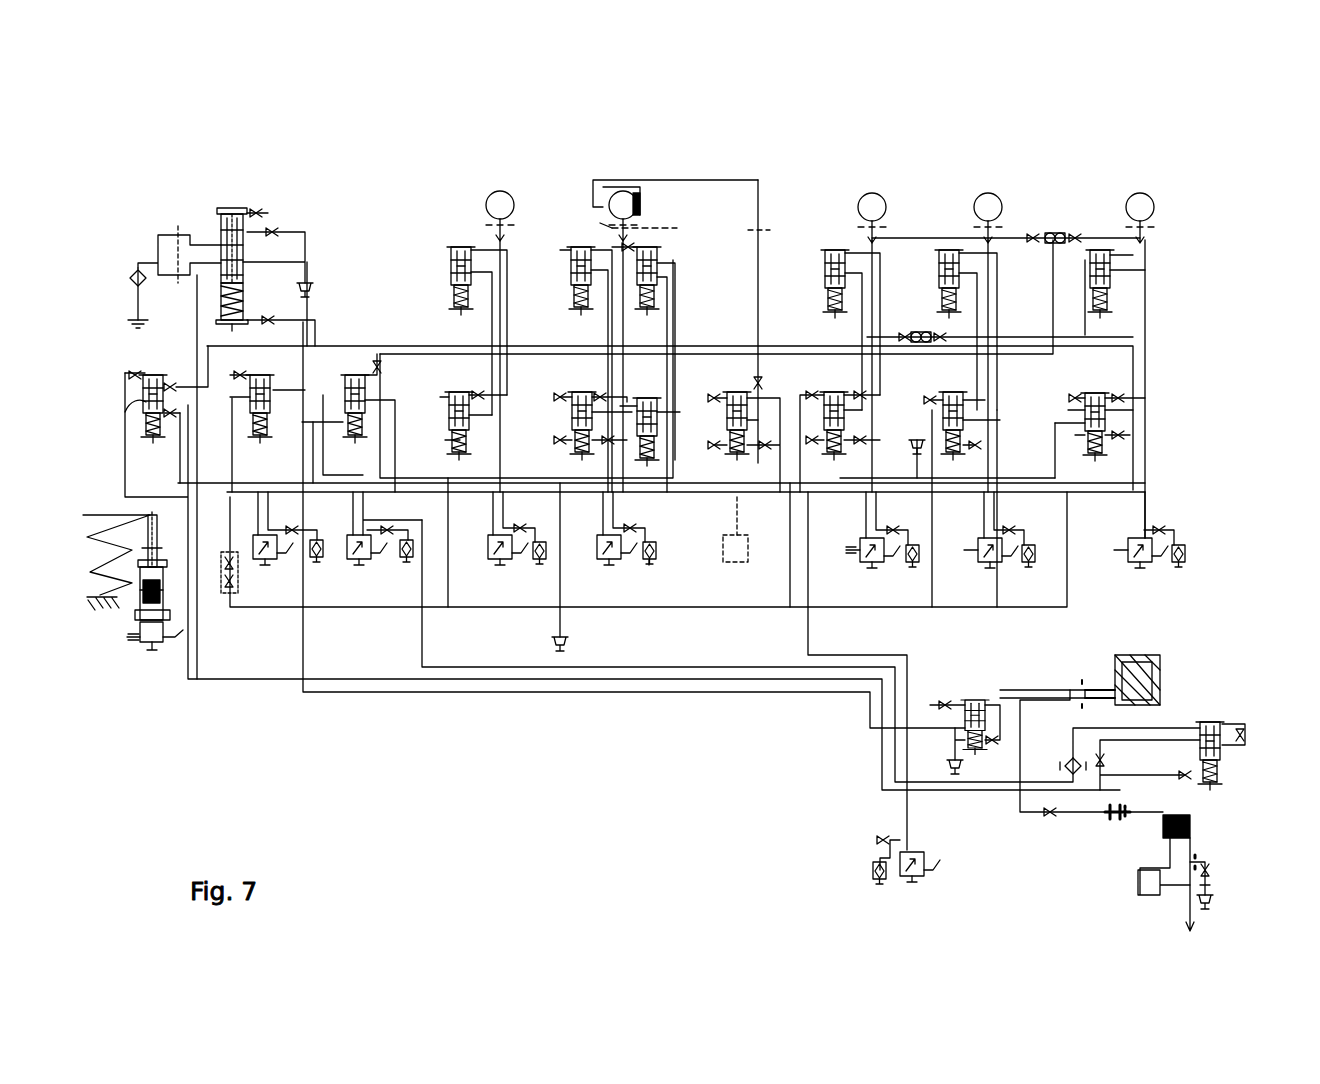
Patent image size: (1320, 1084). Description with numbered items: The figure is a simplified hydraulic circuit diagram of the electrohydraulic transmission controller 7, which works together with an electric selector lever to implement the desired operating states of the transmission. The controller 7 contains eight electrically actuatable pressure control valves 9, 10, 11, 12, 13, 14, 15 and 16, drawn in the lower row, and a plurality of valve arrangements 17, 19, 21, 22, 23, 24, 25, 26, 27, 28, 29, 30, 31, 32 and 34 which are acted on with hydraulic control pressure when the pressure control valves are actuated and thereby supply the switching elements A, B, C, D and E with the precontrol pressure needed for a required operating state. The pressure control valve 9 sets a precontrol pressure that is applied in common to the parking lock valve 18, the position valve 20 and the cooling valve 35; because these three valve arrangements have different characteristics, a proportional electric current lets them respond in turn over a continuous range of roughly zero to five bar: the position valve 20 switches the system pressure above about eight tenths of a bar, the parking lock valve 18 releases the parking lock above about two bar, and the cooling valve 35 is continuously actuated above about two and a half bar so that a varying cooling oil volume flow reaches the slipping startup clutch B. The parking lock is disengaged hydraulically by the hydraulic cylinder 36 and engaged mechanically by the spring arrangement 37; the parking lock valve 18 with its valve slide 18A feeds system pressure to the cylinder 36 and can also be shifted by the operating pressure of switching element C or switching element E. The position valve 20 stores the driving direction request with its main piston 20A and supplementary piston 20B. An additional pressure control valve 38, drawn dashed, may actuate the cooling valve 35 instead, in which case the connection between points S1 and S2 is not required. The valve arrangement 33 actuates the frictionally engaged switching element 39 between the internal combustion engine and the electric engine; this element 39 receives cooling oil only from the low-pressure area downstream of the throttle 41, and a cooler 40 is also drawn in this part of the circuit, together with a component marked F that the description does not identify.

The electrohydraulic transmission controller 7 is at (198, 168).
The pressure control valve 9 is at (268, 560).
The pressure control valve 10 is at (360, 558).
The pressure control valve 11 is at (498, 565).
The pressure control valve 12 is at (607, 563).
The pressure control valve 13 is at (868, 563).
The pressure control valve 14 is at (987, 565).
The pressure control valve 15 is at (1150, 535).
The pressure control valve 16 is at (920, 870).
The valve arrangement 17 is at (240, 208).
The parking lock valve 18 is at (148, 366).
The valve slide 18A is at (146, 406).
The valve arrangement 19 is at (263, 372).
The position valve 20 is at (355, 372).
The main piston 20A is at (365, 540).
The supplementary piston 20B is at (447, 470).
The valve arrangement 21 is at (470, 395).
The valve arrangement 22 is at (453, 247).
The valve arrangement 23 is at (580, 455).
The valve arrangement 24 is at (581, 247).
The valve arrangement 25 is at (645, 442).
The valve arrangement 26 is at (660, 248).
The valve arrangement 27 is at (868, 455).
The valve arrangement 28 is at (833, 250).
The valve arrangement 29 is at (953, 392).
The valve arrangement 30 is at (947, 250).
The valve arrangement 31 is at (1112, 410).
The valve arrangement 32 is at (1103, 248).
The valve arrangement 33 is at (985, 725).
The valve arrangement 34 is at (1230, 738).
The cooling valve 35 is at (731, 442).
The hydraulic cylinder 36 is at (137, 650).
The spring arrangement 37 is at (98, 542).
The additional pressure control valve 38 is at (736, 562).
The switching element 39 is at (1140, 655).
The cooler 40 is at (1190, 833).
The throttle 41 is at (1050, 816).
The switching element A is at (507, 205).
The switching element B is at (650, 200).
The switching element C is at (878, 196).
The switching element D is at (1002, 200).
The switching element E is at (1152, 208).
The point S1 is at (318, 560).
The point S2 is at (714, 442).
The filter F is at (1068, 756).